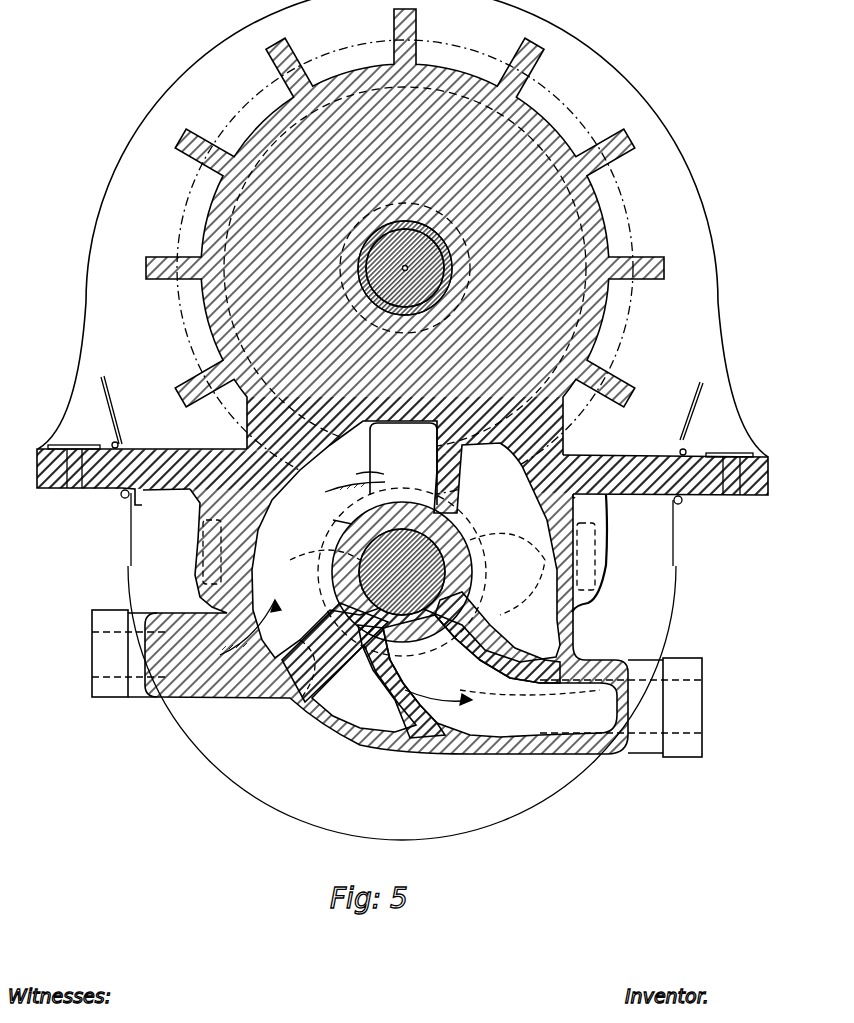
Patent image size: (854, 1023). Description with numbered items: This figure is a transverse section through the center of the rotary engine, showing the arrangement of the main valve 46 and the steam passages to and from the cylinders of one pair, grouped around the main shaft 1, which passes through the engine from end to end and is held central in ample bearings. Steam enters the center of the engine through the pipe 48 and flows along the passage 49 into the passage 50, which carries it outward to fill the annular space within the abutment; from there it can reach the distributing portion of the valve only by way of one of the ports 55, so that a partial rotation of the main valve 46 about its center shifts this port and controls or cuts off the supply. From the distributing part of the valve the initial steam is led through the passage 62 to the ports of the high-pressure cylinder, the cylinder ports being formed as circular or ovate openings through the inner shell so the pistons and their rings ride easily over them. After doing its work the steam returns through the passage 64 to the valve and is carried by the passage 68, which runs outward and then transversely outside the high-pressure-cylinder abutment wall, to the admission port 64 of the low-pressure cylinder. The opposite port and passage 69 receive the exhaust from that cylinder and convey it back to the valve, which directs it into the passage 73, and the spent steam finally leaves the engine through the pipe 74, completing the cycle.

The main shaft 1 is at (445, 283).
The main valve 46 is at (455, 576).
The pipe 48 is at (186, 648).
The passage 49 is at (345, 489).
The passage 50 is at (415, 500).
The port 55 is at (332, 516).
The passage 62 is at (355, 469).
The port / passage 64 is at (465, 467).
The passage 68 is at (205, 553).
The port and passage 69 is at (593, 550).
The passage 73 is at (396, 650).
The pipe 74 is at (621, 707).